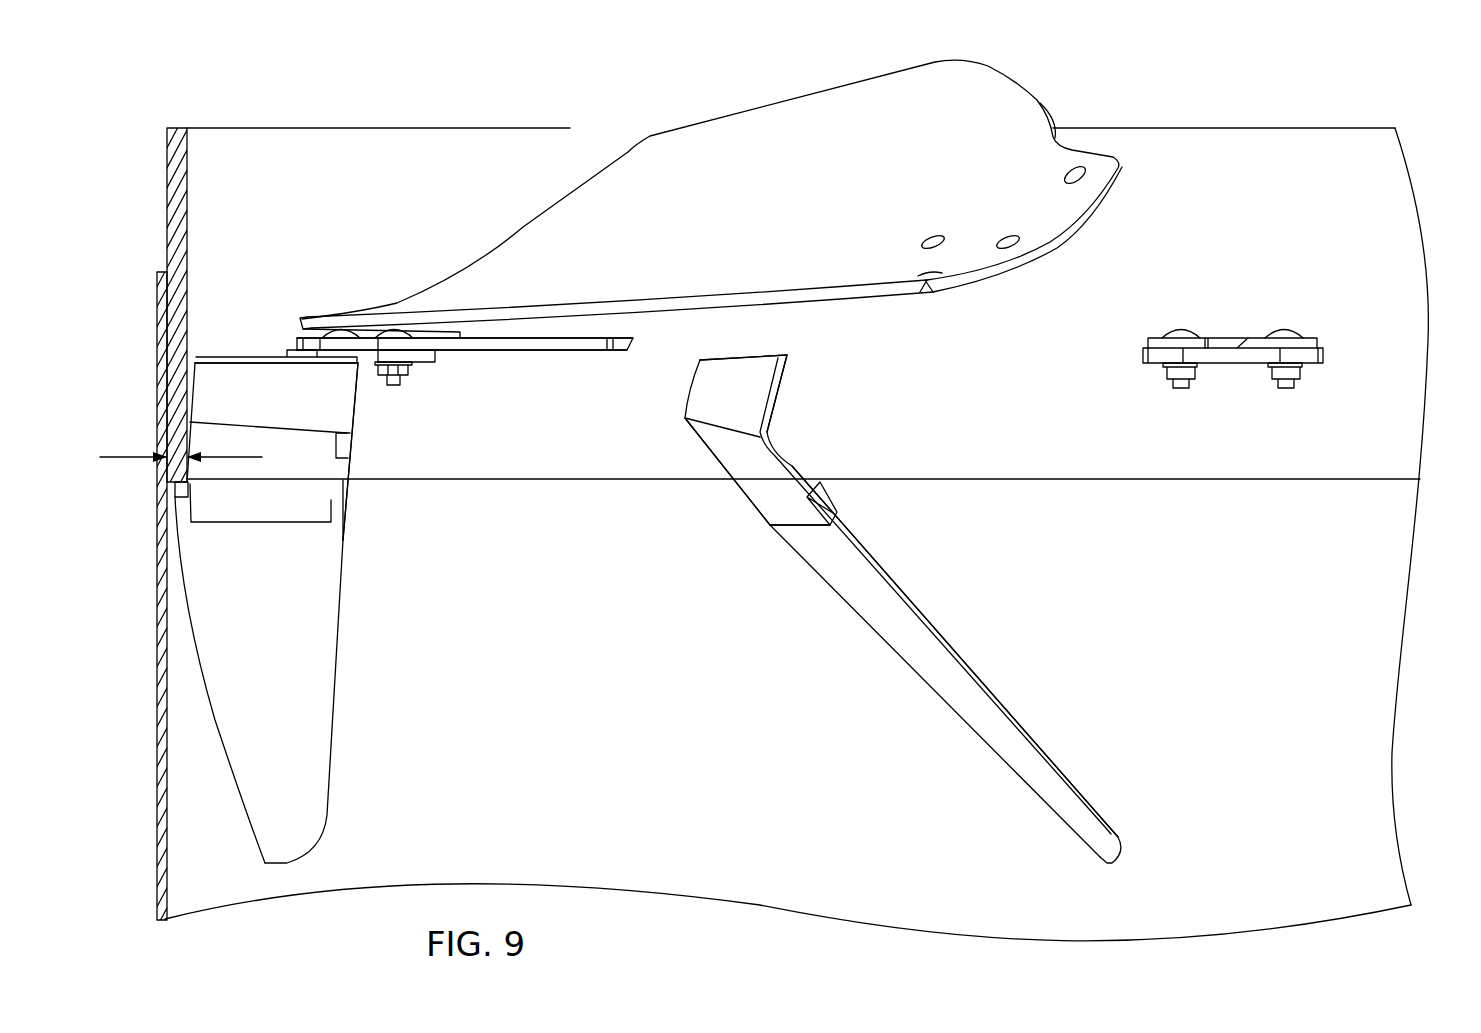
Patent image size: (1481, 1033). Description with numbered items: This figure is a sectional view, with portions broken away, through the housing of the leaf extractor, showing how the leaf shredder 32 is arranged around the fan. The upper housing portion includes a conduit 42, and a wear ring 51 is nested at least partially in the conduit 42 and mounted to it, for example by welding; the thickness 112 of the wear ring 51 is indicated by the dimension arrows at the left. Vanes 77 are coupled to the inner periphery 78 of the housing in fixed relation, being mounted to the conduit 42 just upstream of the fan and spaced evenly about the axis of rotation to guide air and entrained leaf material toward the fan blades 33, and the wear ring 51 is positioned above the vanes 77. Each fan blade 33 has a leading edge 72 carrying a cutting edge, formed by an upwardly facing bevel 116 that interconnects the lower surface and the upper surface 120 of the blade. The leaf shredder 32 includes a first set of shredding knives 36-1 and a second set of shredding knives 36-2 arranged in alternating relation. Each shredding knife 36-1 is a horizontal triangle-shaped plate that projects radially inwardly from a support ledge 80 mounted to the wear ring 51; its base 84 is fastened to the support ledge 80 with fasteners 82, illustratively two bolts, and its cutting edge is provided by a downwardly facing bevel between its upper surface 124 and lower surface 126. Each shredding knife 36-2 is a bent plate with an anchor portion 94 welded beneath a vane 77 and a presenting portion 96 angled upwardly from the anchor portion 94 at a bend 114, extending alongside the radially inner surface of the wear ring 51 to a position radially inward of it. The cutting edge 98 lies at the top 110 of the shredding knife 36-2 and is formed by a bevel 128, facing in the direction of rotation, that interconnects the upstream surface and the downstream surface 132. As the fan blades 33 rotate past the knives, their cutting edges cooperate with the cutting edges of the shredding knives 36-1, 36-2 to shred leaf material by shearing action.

The leaf shredder 32 is at (1372, 350).
The fan blades 33 is at (522, 220).
The first set of shredding knives 36-1 is at (1245, 288).
The second set of shredding knives 36-2 is at (370, 408).
The conduit 42 is at (533, 500).
The wear ring 51 is at (425, 150).
The leading edge 72 is at (472, 367).
The vanes 77 is at (262, 667).
The inner periphery 78 is at (1295, 455).
The support ledge 80 is at (292, 350).
The fasteners 82 is at (398, 330).
The base 84 is at (372, 350).
The anchor portion 94 is at (310, 490).
The presenting portion 96 is at (323, 407).
The cutting edge 98 is at (312, 358).
The top 110 is at (720, 350).
The thickness 112 is at (235, 460).
The bend 114 is at (313, 457).
The bevel 116 is at (656, 362).
The upper surface 120 is at (752, 165).
The upper surface 124 is at (577, 330).
The lower surface 126 is at (473, 352).
The bevel 128 is at (282, 357).
The downstream surface 132 is at (283, 390).